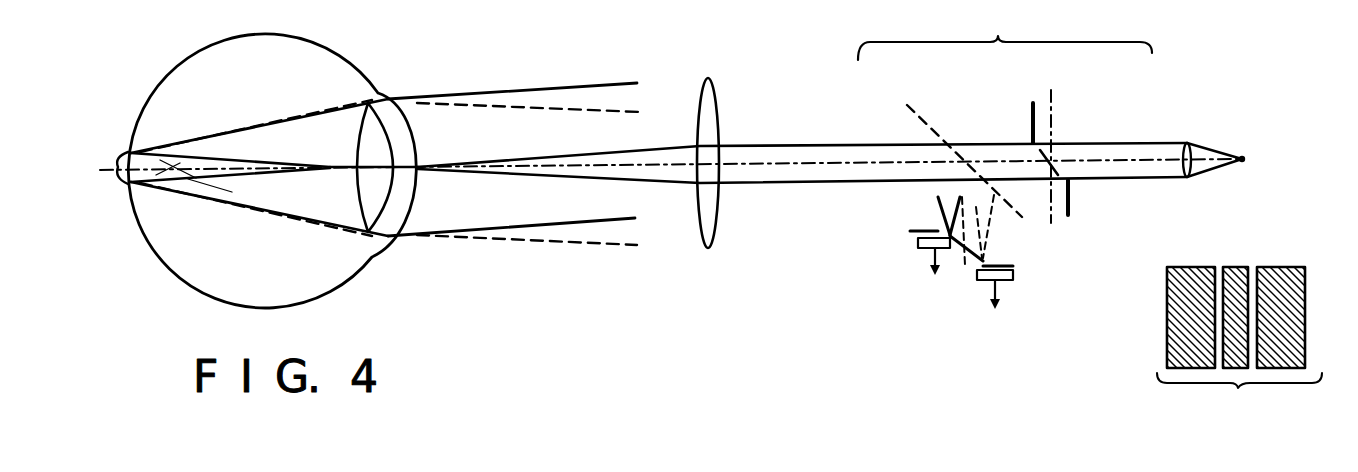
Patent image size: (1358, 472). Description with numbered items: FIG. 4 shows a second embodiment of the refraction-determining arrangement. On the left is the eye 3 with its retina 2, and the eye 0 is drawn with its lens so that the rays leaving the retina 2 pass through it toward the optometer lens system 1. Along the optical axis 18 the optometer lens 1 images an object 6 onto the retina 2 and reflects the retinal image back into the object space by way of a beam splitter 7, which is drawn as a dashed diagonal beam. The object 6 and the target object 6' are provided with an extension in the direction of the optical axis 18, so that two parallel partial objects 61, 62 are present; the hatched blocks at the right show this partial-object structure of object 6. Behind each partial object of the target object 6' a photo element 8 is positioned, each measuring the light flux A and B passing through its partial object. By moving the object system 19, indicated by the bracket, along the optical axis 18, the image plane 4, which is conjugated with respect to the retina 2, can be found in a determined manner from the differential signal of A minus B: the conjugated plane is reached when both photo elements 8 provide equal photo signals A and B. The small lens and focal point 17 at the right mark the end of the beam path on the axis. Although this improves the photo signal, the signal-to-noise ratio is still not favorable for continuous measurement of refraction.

The eye 0 is at (312, 41).
The optometer lens system 1 is at (696, 86).
The retina 2 is at (109, 172).
The eye 3 is at (134, 109).
The image plane 4 is at (1061, 99).
The object 6 is at (1190, 245).
The target object 6' is at (943, 296).
The beam splitter 7 is at (898, 104).
The photo element 8 is at (917, 245).
The light source 17 is at (1297, 142).
The optical axis 18 is at (1285, 141).
The object system 19 is at (1005, 36).
The partial object 61 is at (1020, 143).
The partial object 62 is at (1078, 172).
The light flux A is at (927, 262).
The light flux B is at (1001, 295).